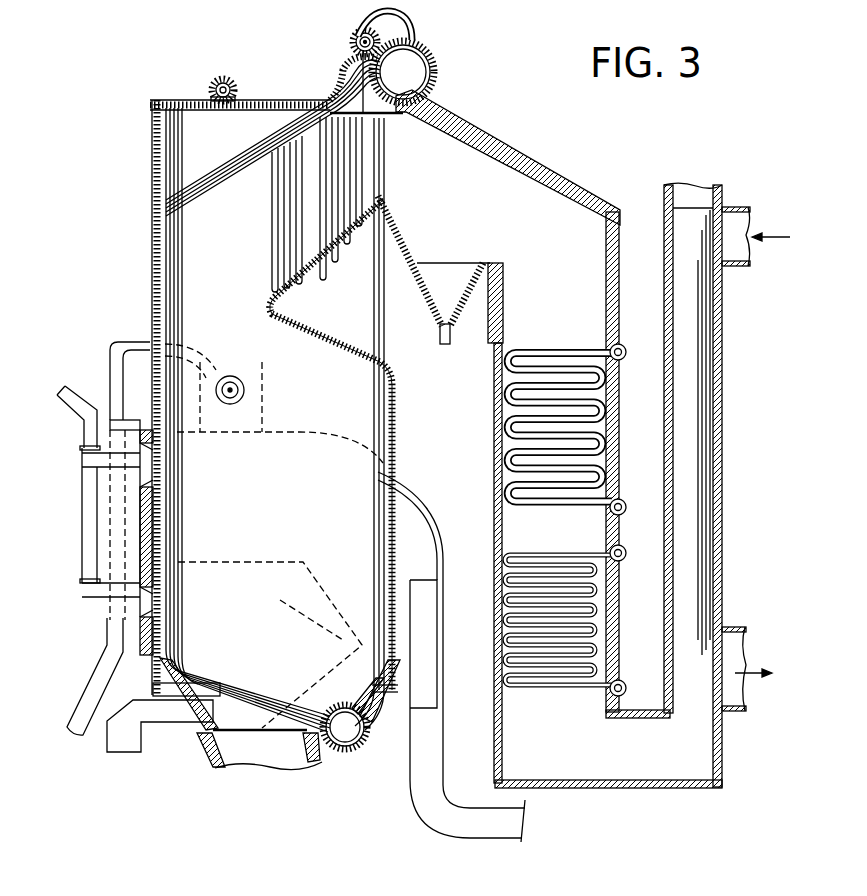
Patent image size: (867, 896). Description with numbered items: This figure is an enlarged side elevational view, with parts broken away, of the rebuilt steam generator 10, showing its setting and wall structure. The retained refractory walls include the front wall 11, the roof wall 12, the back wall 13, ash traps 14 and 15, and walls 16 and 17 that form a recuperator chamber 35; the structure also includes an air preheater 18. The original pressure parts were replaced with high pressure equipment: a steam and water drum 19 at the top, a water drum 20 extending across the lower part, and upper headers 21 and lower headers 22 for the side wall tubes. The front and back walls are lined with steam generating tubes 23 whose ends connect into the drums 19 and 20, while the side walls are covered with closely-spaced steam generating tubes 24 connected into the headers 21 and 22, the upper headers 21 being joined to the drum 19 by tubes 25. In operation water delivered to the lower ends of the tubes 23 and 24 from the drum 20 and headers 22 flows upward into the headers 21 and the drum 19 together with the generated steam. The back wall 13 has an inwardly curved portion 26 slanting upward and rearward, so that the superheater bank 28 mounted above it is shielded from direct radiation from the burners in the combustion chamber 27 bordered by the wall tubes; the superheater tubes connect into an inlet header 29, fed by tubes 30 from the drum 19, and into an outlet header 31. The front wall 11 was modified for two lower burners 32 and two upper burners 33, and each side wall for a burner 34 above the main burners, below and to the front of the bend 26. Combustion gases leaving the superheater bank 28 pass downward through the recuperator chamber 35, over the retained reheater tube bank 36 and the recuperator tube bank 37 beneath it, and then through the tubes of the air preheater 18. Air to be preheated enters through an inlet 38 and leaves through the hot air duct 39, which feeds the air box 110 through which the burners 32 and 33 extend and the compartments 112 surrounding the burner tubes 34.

The steam generator 10 is at (146, 264).
The front wall 11 is at (150, 288).
The roof wall 12 is at (254, 100).
The back wall 13 is at (398, 410).
The ash trap 14 is at (206, 753).
The ash trap 15 is at (436, 318).
The recuperator chamber wall 16 is at (492, 499).
The recuperator chamber wall 17 is at (619, 452).
The air preheater 18 is at (706, 396).
The steam and water drum 19 is at (412, 66).
The water drum 20 is at (348, 748).
The upper header 21 is at (208, 100).
The lower header 22 is at (386, 700).
The steam generating tubes 23 is at (164, 272).
The steam generating tubes 24 is at (168, 170).
The tubes 25 is at (342, 68).
The inwardly curved portion 26 is at (280, 312).
The combustion chamber 27 is at (280, 502).
The superheater tube bank 28 is at (342, 204).
The inlet header 29 is at (366, 32).
The tubes 30 is at (398, 19).
The outlet header 31 is at (230, 85).
The lower burner 32 is at (120, 600).
The upper burner 33 is at (120, 472).
The burner 34 is at (244, 390).
The recuperator chamber 35 is at (567, 291).
The superheated steam reheater tube bank 36 is at (578, 358).
The recuperator tube bank 37 is at (568, 560).
The air inlet 38 is at (738, 208).
The hot air duct 39 is at (738, 630).
The air box 110 is at (112, 440).
The compartment 112 is at (262, 430).